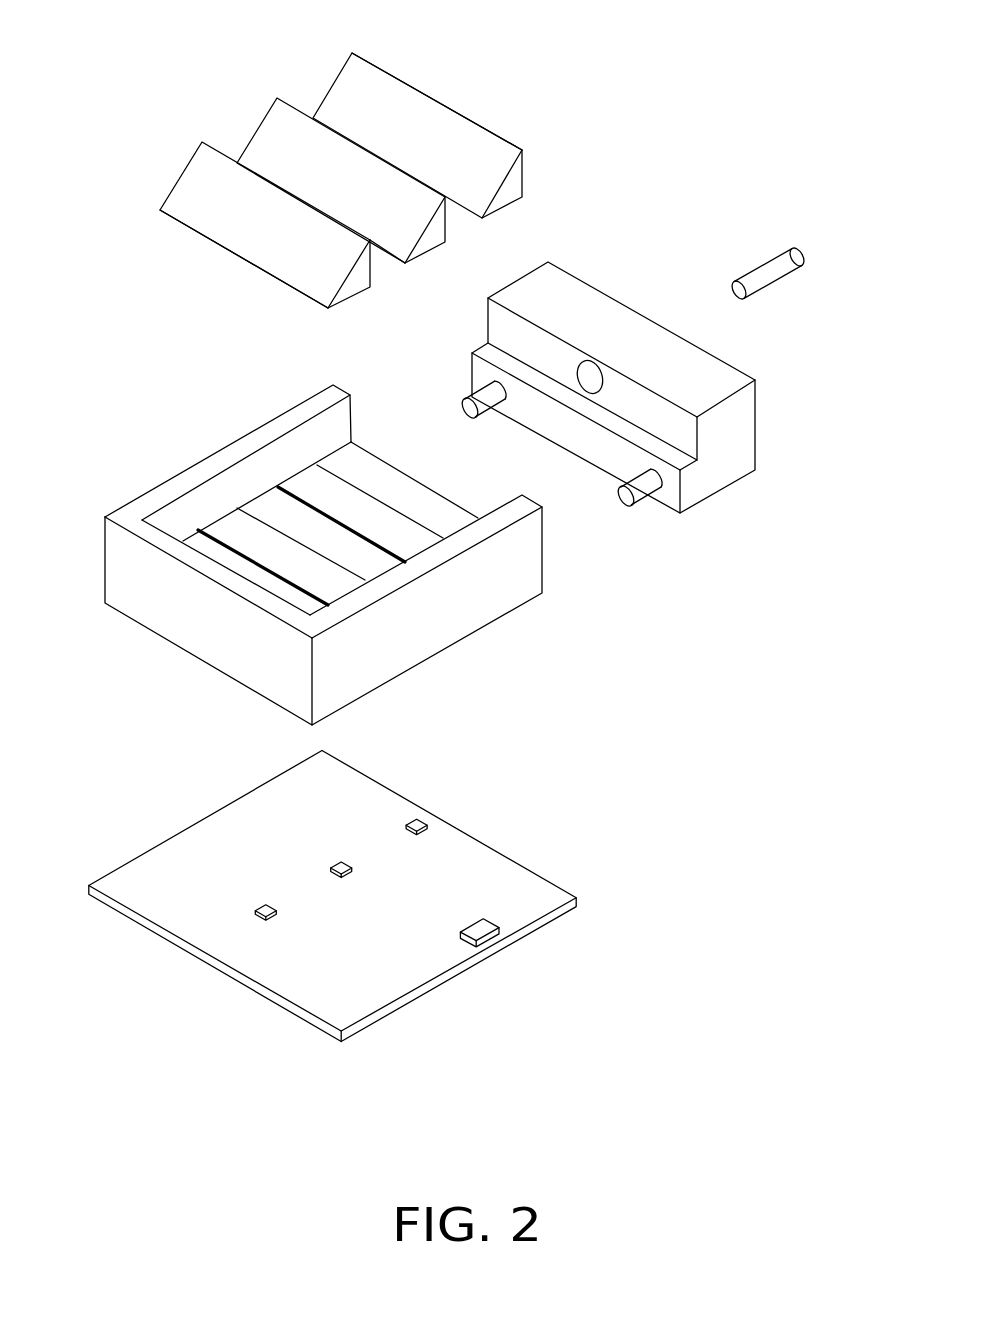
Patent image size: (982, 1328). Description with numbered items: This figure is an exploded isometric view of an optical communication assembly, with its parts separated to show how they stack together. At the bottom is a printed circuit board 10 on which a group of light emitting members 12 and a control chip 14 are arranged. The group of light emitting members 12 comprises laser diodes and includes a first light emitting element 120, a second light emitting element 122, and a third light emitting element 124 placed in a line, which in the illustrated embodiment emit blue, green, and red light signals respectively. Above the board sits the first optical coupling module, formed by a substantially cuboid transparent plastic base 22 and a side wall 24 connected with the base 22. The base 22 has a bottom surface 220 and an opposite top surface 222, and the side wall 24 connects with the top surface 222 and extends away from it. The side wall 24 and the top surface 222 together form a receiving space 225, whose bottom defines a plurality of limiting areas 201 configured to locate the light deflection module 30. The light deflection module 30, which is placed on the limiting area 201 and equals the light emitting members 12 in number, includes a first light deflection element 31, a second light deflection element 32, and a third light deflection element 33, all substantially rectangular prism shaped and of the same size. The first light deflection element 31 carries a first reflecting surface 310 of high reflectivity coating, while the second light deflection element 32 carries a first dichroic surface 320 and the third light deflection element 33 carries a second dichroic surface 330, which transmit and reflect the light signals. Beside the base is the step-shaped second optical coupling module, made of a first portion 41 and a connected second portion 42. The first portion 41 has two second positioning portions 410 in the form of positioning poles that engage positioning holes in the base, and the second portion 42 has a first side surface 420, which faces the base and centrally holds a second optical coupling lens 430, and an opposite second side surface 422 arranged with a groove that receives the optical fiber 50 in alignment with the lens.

The printed circuit board 10 is at (529, 845).
The group of light emitting members 12 is at (195, 1049).
The first light emitting element 120 is at (262, 915).
The second light emitting element 122 is at (340, 875).
The third light emitting element 124 is at (415, 831).
The control chip 14 is at (482, 931).
The base 22 is at (203, 625).
The side wall 24 is at (177, 490).
The limiting areas 201 is at (368, 560).
The bottom surface 220 is at (497, 622).
The top surface 222 is at (308, 490).
The receiving space 225 is at (360, 477).
The light deflection module 30 is at (229, 8).
The first light deflection element 31 is at (200, 182).
The second light deflection element 32 is at (268, 143).
The third light deflection element 33 is at (343, 97).
The first reflecting surface 310 is at (273, 252).
The first dichroic surface 320 is at (405, 230).
The second dichroic surface 330 is at (430, 123).
The first portion 41 is at (700, 482).
The second positioning portions 410 is at (622, 495).
The second portion 42 is at (728, 423).
The first side surface 420 is at (512, 328).
The second side surface 422 is at (718, 357).
The second optical coupling lens 430 is at (590, 378).
The optical fiber 50 is at (768, 278).